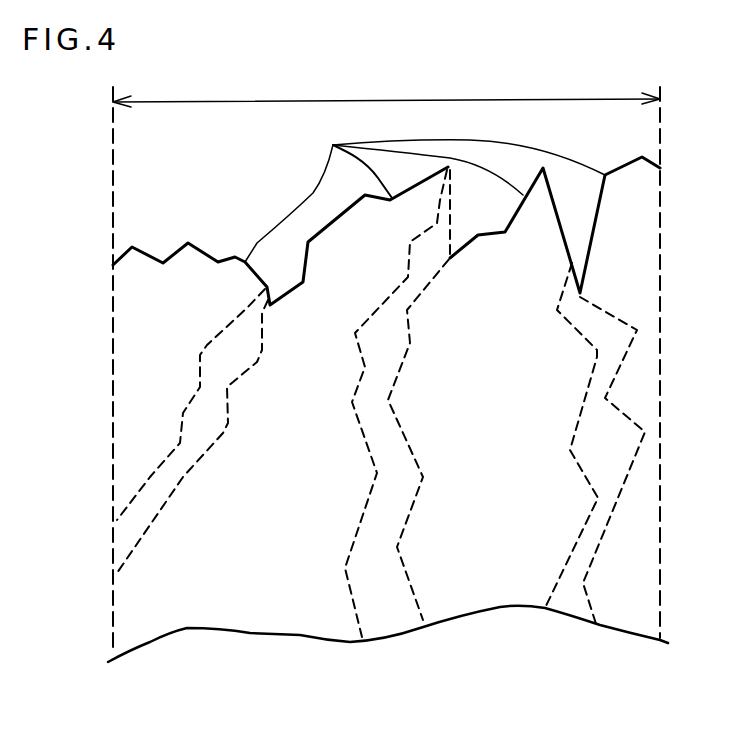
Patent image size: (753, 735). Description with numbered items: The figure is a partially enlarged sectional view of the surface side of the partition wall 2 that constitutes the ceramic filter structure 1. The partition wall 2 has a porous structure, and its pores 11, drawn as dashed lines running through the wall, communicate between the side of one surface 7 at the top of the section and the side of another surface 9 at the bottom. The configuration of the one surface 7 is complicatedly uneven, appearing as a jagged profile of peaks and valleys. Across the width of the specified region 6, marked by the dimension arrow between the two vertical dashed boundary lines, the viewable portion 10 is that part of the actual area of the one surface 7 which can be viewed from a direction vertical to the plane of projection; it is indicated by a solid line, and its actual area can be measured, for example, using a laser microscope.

The ceramic filter structure 1 is at (713, 73).
The partition wall 2 is at (142, 382).
The specified region 6 is at (386, 87).
The one surface 7 is at (185, 205).
The another surface 9 is at (153, 688).
The viewable portion 10 is at (425, 188).
The pores 11 is at (142, 508).